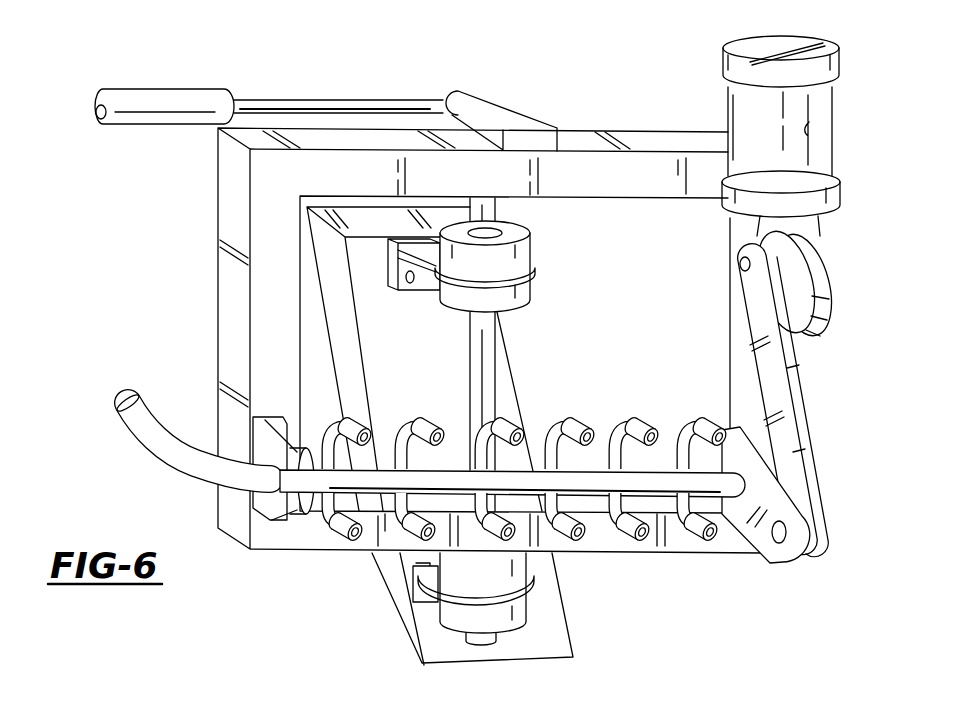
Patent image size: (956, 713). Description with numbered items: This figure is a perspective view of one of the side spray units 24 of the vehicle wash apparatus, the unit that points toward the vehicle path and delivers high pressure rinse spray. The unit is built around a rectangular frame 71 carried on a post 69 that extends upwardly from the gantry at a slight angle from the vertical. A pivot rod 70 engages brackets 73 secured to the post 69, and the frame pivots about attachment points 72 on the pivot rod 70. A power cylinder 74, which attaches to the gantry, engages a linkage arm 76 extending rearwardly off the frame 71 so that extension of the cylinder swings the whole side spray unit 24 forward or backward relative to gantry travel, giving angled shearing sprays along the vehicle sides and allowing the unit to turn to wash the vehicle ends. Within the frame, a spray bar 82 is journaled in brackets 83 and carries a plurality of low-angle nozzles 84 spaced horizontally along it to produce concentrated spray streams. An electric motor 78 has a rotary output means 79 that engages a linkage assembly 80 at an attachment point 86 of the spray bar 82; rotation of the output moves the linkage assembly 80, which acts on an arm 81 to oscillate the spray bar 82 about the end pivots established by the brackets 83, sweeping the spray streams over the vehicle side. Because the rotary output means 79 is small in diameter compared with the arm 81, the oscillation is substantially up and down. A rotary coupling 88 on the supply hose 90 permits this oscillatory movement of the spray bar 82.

The side spray unit 24 is at (197, 237).
The post 69 is at (514, 411).
The pivot rod 70 is at (492, 370).
The rectangular frame 71 is at (228, 178).
The attachment points 72 is at (532, 243).
The brackets 73 is at (388, 250).
The power cylinder 74 is at (132, 90).
The linkage arm 76 is at (498, 110).
The electric motor 78 is at (833, 112).
The rotary output means 79 is at (795, 272).
The linkage assembly 80 is at (758, 390).
The arm 81 is at (760, 542).
The spray bar 82 is at (457, 465).
The brackets 83 is at (256, 521).
The low-angle nozzles 84 is at (420, 424).
The attachment point 86 is at (738, 263).
The rotary coupling 88 is at (252, 433).
The hose 90 is at (153, 432).